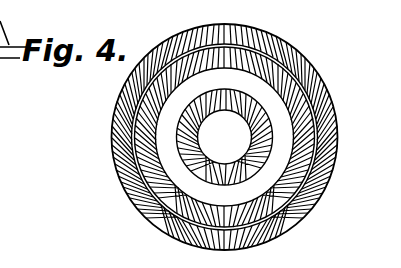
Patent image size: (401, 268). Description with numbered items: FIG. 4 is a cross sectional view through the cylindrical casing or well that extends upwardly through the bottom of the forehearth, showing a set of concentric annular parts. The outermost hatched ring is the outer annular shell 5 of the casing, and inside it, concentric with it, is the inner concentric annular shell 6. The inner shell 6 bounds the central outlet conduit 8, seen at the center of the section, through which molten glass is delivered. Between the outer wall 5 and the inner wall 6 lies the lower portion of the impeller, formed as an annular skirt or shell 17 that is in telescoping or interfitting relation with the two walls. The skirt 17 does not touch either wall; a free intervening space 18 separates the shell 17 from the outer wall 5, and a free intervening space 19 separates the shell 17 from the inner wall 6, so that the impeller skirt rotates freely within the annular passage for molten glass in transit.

The outer annular shell 5 is at (323, 154).
The inner concentric annular shell 6 is at (270, 118).
The central outlet conduit 8 is at (225, 137).
The annular skirt or shell 17 is at (268, 209).
The free intervening space 18 is at (300, 186).
The free intervening space 19 is at (260, 90).